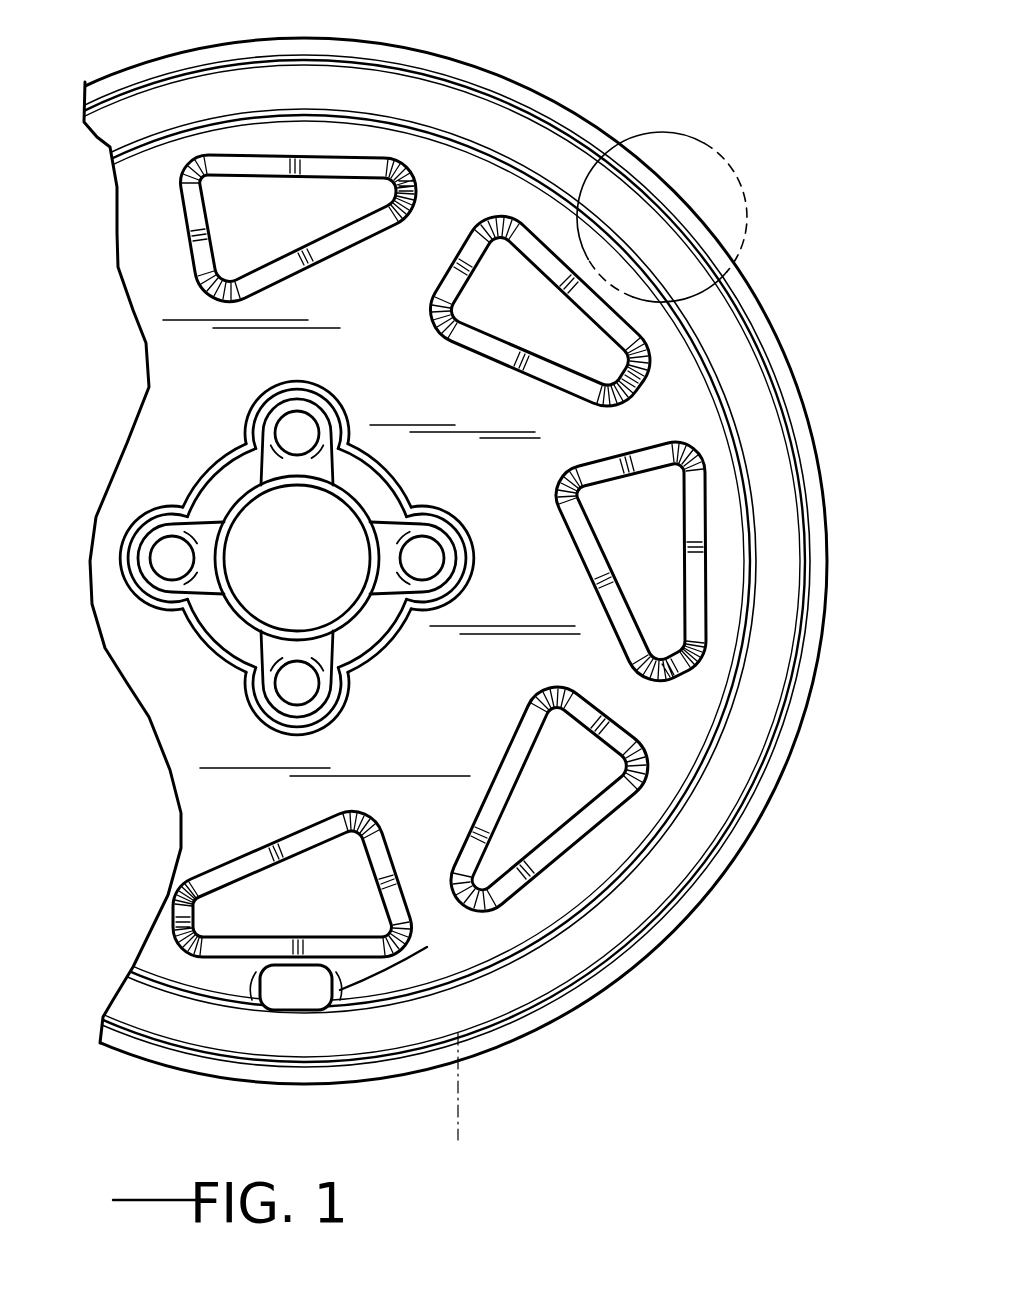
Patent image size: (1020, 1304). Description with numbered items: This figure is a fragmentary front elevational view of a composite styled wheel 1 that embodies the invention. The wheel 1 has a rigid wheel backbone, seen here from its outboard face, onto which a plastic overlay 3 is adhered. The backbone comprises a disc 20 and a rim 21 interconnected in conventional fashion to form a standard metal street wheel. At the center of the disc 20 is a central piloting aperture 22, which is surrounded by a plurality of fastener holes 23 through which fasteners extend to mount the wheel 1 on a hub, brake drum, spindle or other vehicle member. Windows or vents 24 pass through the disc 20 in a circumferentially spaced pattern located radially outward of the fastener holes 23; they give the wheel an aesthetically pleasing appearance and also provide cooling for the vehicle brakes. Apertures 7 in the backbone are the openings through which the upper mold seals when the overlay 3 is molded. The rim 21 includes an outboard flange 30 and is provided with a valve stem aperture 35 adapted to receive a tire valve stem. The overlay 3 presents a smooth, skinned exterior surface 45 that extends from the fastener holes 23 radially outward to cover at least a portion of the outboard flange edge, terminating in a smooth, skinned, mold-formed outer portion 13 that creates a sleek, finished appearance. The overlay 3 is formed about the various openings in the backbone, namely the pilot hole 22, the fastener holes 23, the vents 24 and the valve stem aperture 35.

The composite styled wheel 1 is at (498, 57).
The plastic overlay 3 is at (520, 493).
The apertures 7 is at (295, 192).
The outer portion 13 is at (685, 220).
The disc 20 is at (205, 805).
The rim 21 is at (112, 117).
The central piloting aperture 22 is at (254, 503).
The fastener holes 23 is at (292, 425).
The windows or vents 24 is at (297, 270).
The outboard flange 30 is at (740, 735).
The valve stem aperture 35 is at (430, 947).
The skinned exterior surface 45 is at (148, 678).